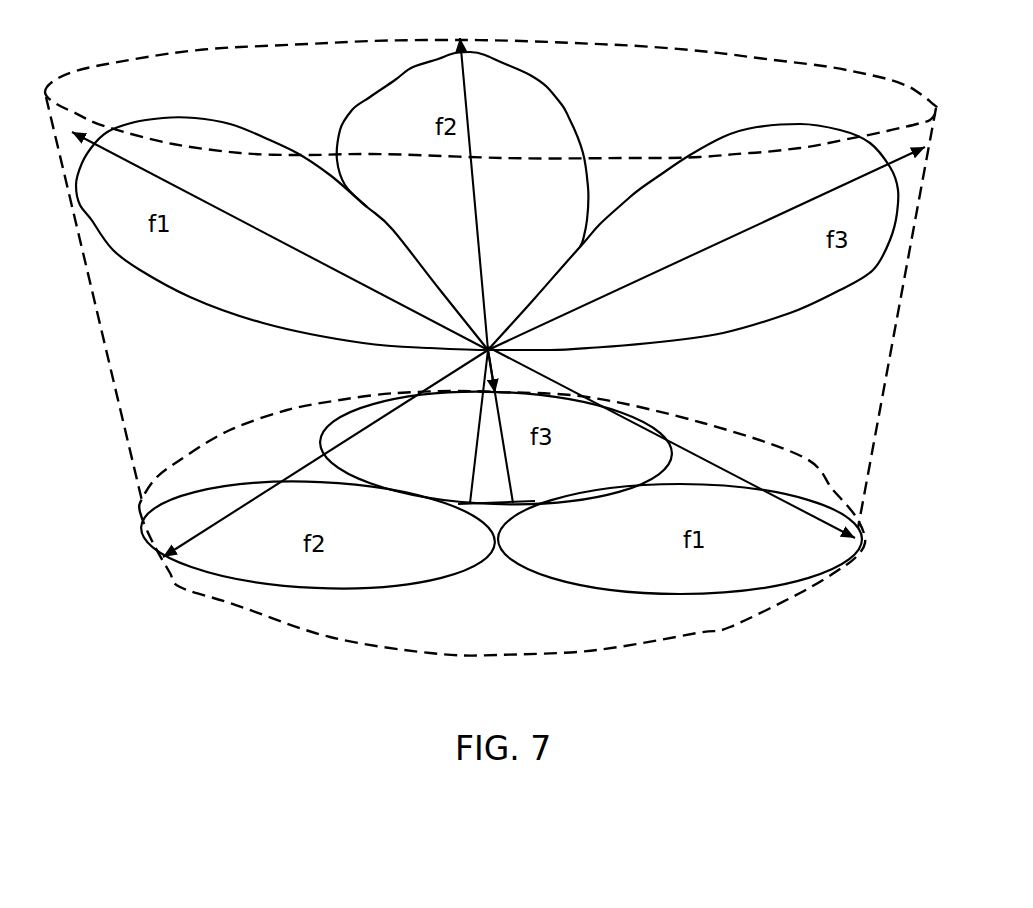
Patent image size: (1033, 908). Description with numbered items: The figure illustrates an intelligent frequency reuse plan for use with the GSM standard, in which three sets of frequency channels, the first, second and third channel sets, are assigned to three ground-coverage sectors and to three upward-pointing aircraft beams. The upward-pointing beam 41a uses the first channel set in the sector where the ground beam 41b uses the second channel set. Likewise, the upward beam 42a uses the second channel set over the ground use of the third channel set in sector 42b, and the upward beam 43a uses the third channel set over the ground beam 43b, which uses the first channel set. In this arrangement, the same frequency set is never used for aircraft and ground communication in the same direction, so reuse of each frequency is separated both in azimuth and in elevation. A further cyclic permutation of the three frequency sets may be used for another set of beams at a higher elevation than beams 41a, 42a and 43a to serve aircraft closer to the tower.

The upward-pointing beam 41a is at (187, 297).
The upward beam 42a is at (376, 96).
The upward beam 43a is at (750, 127).
The ground beam 41b is at (330, 590).
The sector 42b is at (320, 437).
The ground beam 43b is at (618, 593).